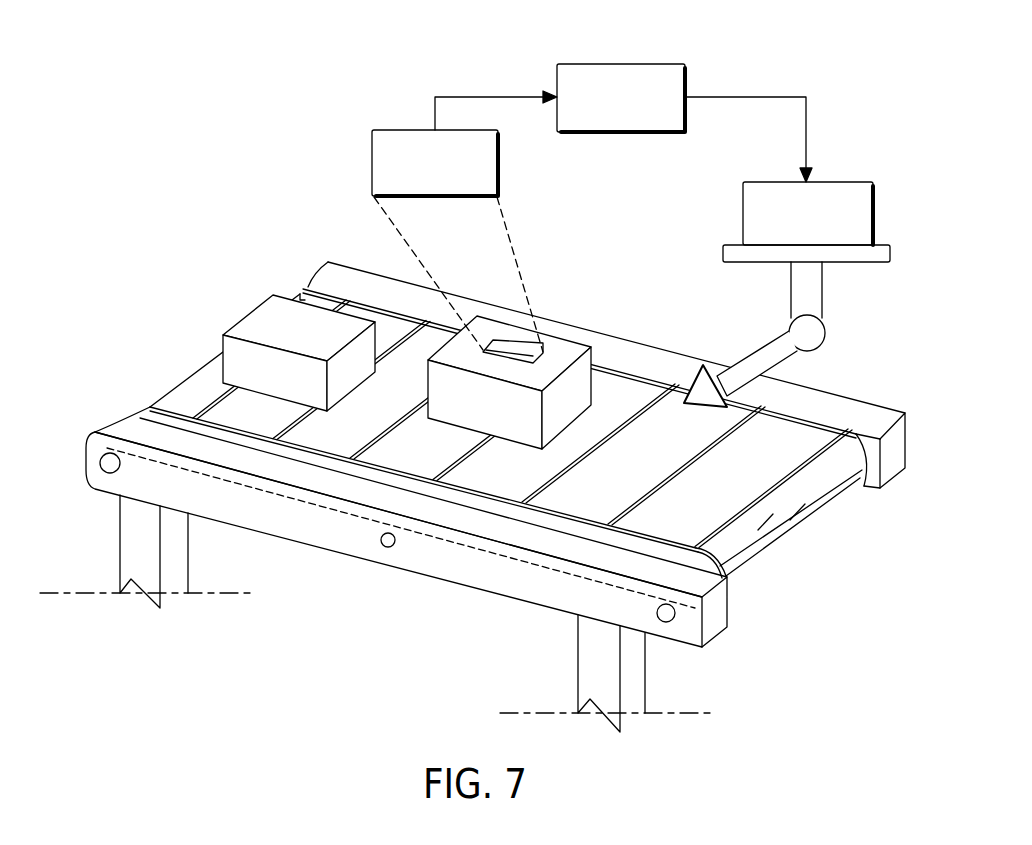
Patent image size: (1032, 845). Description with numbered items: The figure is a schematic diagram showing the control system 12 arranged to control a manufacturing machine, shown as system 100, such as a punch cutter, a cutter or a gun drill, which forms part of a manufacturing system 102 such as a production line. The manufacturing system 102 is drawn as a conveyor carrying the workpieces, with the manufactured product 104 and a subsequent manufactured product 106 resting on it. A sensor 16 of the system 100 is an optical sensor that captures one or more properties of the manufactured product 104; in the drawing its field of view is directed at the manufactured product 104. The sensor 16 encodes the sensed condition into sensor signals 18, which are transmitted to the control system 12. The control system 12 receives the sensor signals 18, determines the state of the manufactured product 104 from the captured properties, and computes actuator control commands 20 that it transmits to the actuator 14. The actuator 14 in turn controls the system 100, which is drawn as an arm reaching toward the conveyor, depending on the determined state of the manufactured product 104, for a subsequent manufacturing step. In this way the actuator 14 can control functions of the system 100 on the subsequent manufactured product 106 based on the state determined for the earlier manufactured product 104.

The control system 12 is at (622, 63).
The actuator 14 is at (847, 180).
The sensor 16 is at (372, 160).
The sensor signals 18 is at (495, 93).
The actuator control commands 20 is at (745, 95).
The system (manufacturing machine) 100 is at (755, 348).
The manufacturing system 102 is at (793, 538).
The manufactured product 104 is at (553, 350).
The subsequent manufactured product 106 is at (252, 318).